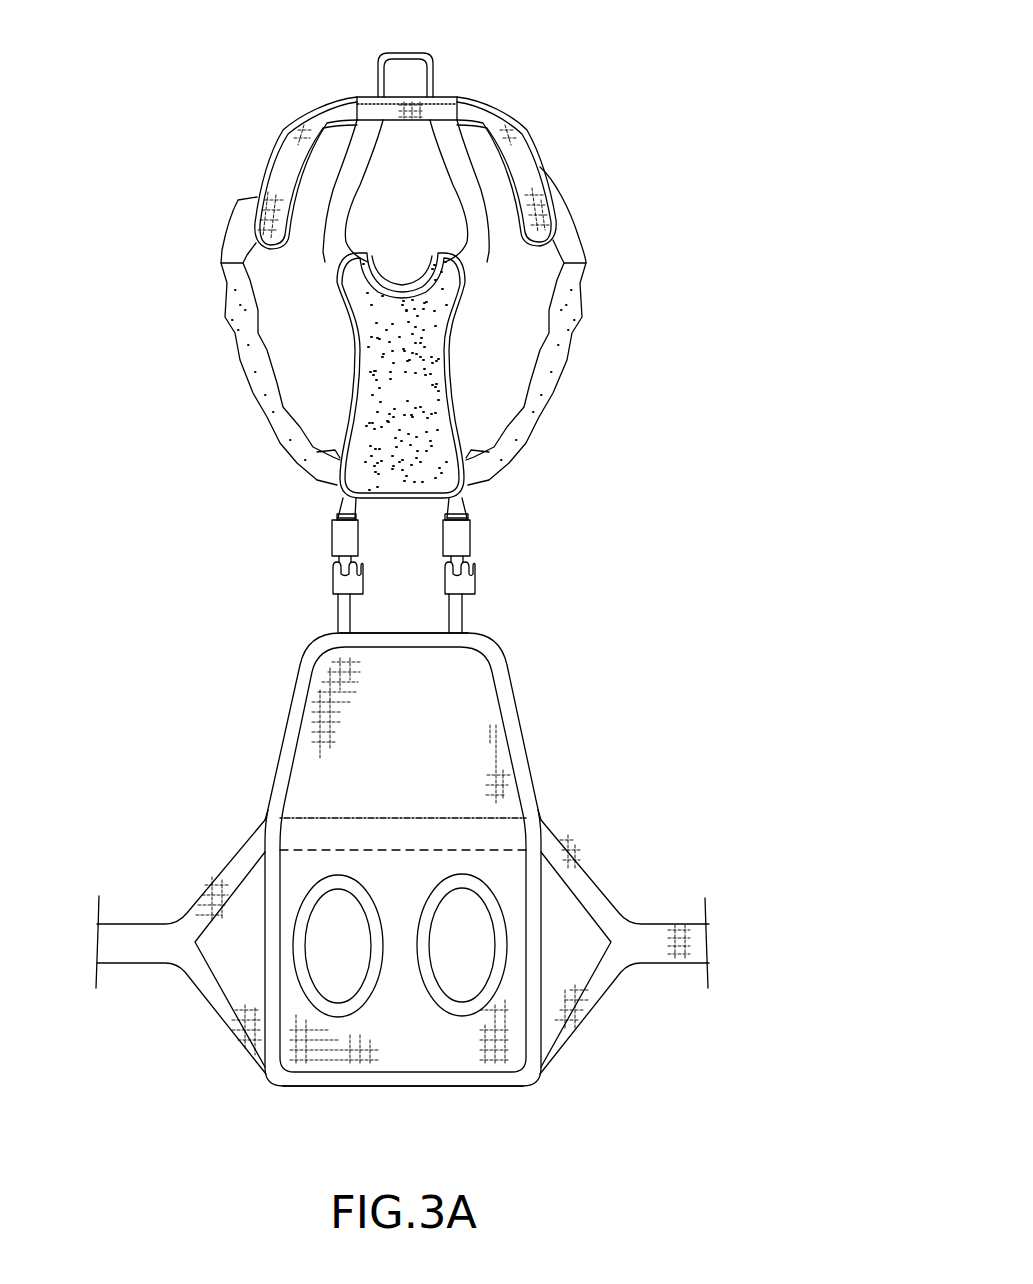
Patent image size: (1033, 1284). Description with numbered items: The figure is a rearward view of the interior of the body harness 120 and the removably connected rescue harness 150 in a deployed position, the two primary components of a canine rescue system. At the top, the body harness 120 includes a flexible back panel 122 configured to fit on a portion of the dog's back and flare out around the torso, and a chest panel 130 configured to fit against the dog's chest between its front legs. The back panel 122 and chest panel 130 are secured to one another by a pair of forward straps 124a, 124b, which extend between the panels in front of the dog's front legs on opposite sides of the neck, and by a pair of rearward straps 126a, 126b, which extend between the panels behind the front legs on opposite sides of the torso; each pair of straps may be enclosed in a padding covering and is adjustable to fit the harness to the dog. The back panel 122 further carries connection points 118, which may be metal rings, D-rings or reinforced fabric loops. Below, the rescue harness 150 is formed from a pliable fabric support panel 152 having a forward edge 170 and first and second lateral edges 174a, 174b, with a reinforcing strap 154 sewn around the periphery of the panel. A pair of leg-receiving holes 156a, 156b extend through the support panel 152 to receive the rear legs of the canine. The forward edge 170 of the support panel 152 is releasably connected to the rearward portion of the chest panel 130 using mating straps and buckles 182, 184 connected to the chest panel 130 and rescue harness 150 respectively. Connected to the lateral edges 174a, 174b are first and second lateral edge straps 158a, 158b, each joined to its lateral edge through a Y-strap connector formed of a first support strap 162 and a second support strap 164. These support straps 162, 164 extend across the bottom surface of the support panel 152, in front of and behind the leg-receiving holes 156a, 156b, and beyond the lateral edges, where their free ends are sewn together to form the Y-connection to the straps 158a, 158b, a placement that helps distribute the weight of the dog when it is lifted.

The connection points 118 is at (431, 60).
The body harness 120 is at (640, 204).
The back panel 122 is at (482, 115).
The forward strap 124a is at (467, 165).
The forward strap 124b is at (343, 240).
The rearward strap 126a is at (568, 326).
The rearward strap 126b is at (244, 362).
The chest panel 130 is at (420, 402).
The rescue harness 150 is at (662, 740).
The support panel 152 is at (420, 742).
The reinforcing strap 154 is at (522, 733).
The leg-receiving hole 156a is at (484, 954).
The leg-receiving hole 156b is at (360, 954).
The first strap 158a is at (706, 950).
The second strap 158b is at (140, 937).
The first support strap 162 is at (344, 831).
The second support strap 164 is at (208, 982).
The forward edge 170 is at (390, 640).
The first lateral edge 174a is at (537, 802).
The second lateral edge 174b is at (274, 784).
The mating strap and buckle 182 is at (334, 534).
The mating strap and buckle 184 is at (338, 589).